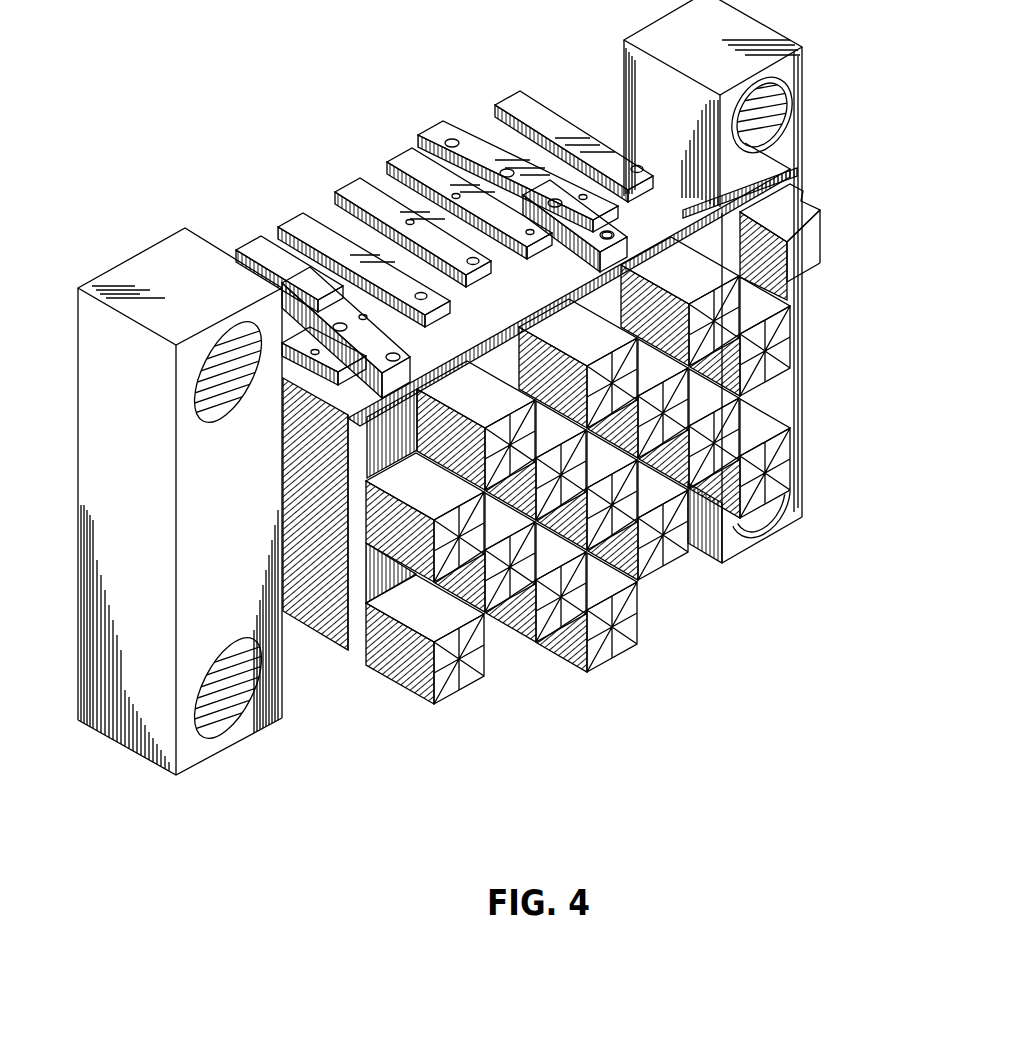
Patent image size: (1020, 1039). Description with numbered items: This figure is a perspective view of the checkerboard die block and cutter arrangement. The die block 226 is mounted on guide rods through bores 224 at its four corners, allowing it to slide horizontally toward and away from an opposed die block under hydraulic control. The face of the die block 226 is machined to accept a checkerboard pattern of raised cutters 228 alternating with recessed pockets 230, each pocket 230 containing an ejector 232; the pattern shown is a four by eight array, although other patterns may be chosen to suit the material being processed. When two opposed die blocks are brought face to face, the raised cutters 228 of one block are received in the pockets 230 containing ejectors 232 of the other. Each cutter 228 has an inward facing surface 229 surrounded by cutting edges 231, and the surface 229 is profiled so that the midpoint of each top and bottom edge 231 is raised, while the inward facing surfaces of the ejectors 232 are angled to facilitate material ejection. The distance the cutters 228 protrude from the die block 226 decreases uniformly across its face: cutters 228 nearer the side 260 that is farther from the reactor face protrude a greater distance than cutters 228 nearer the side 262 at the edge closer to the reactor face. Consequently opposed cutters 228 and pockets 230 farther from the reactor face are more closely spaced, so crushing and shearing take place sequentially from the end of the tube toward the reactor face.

The bore 224 is at (178, 392).
The die block 226 is at (323, 447).
The raised cutter 228 is at (415, 667).
The inward facing surface 229 is at (480, 663).
The recessed pocket 230 is at (700, 390).
The cutting edge 231 is at (772, 368).
The ejector 232 is at (372, 450).
The side of die block farther from reactor face 260 is at (195, 597).
The side of die block closer to reactor face 262 is at (836, 208).